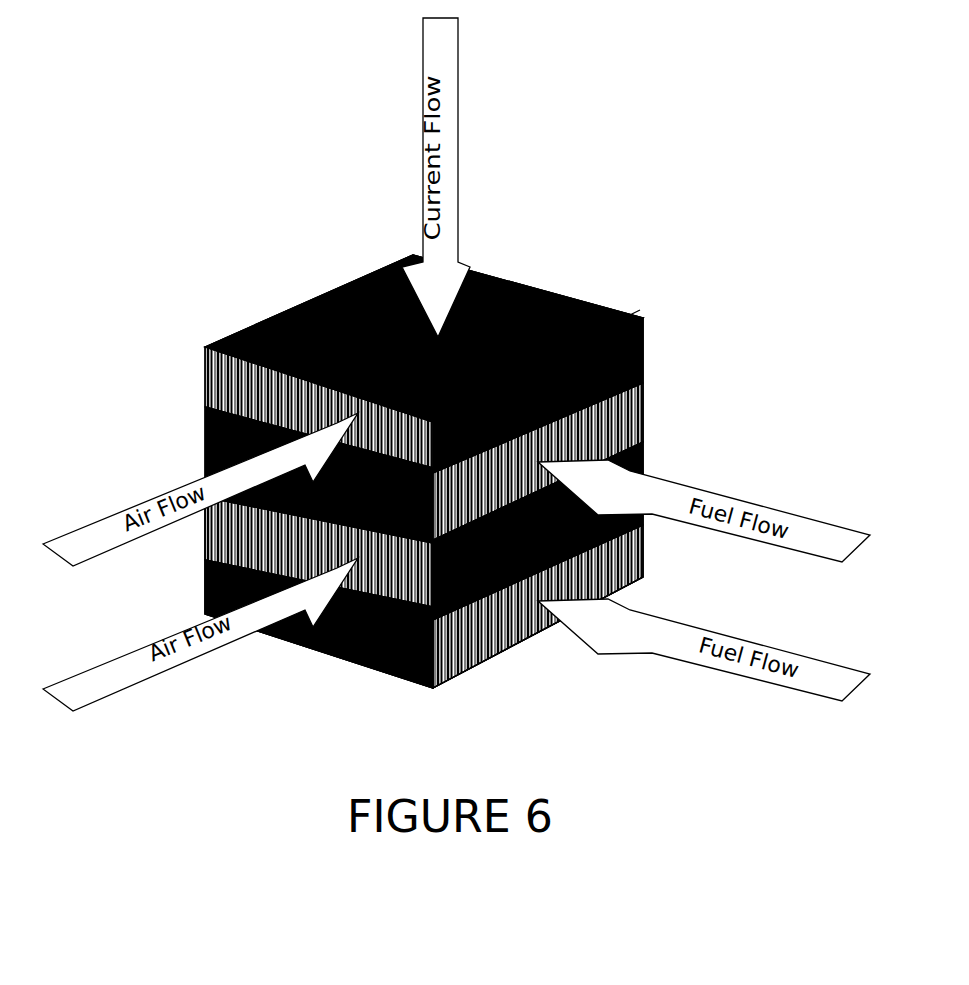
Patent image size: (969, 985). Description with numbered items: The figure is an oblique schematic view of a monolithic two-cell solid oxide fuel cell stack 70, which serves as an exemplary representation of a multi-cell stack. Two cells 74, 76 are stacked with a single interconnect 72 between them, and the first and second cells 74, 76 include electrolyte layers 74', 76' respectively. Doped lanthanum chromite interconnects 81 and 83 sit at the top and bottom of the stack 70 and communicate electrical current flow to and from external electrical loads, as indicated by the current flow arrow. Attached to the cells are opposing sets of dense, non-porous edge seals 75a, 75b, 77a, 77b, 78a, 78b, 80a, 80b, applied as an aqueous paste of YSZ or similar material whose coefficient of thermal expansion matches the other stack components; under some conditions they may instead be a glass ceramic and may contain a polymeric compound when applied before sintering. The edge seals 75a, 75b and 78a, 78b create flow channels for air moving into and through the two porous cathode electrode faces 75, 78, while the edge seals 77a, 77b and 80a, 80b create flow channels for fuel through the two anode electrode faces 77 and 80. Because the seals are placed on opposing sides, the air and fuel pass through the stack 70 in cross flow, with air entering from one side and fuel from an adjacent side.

The two-cell stack 70 is at (544, 194).
The interconnect 72 is at (540, 463).
The first cell 74 is at (579, 426).
The electrolyte layer 74' is at (252, 422).
The porous cathode electrode face 75 is at (205, 375).
The edge seal 75a is at (207, 348).
The edge seal 75b is at (633, 313).
The second cell 76 is at (283, 592).
The electrolyte layer 76' is at (319, 657).
The anode electrode face 77 is at (648, 377).
The edge seal 77a is at (203, 440).
The edge seal 77b is at (650, 413).
The porous cathode electrode face 78 is at (493, 650).
The edge seal 78a is at (180, 557).
The edge seal 78b is at (648, 567).
The anode electrode face 80 is at (537, 628).
The edge seal 80a is at (358, 641).
The edge seal 80b is at (648, 547).
The interconnect 81 is at (368, 335).
The interconnect 83 is at (472, 672).